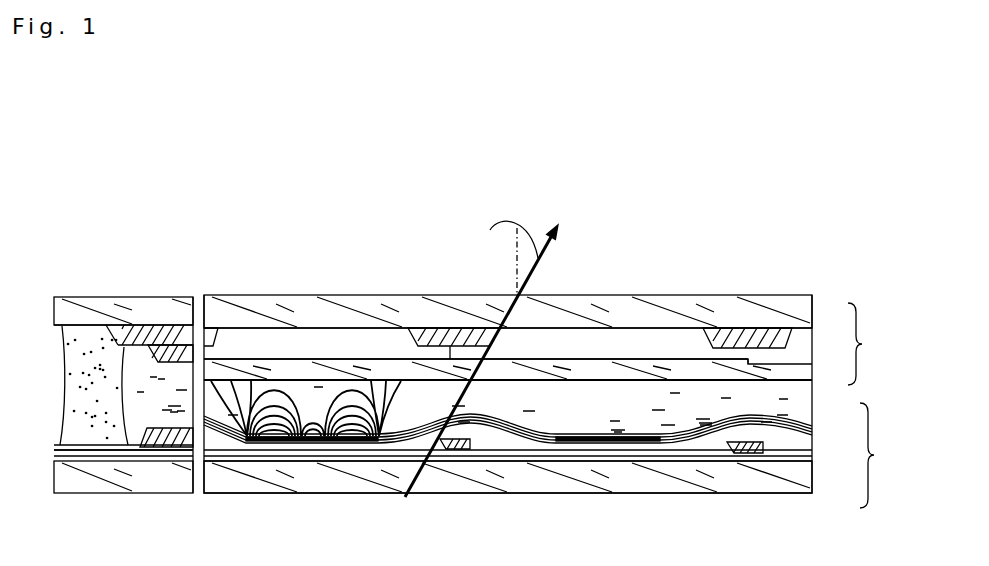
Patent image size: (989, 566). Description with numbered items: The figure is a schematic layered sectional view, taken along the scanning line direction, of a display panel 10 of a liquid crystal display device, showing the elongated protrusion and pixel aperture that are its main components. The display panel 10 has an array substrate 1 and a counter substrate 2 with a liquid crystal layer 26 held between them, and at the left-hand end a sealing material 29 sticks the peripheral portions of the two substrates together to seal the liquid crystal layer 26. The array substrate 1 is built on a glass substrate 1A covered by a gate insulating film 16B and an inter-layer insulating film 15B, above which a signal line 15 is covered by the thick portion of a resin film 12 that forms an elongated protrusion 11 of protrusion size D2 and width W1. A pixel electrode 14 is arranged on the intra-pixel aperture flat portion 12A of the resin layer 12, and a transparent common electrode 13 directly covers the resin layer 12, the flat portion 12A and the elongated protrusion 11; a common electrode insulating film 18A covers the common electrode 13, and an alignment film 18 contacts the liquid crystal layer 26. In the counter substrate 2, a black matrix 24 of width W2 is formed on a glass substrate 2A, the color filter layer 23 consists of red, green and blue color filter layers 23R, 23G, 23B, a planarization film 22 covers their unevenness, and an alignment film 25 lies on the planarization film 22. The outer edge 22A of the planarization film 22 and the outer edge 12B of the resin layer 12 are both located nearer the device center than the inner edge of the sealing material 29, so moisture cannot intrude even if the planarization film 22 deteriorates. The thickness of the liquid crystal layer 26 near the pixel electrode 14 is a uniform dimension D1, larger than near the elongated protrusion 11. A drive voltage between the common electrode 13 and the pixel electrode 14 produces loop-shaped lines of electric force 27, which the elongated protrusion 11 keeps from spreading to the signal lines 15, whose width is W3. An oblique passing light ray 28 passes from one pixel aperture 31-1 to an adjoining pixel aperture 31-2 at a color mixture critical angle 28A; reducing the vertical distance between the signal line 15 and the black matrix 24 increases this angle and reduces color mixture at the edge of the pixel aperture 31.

The display panel 10 is at (103, 236).
The sealing material 29 is at (94, 340).
The outer edge of the planarization film 22A is at (138, 342).
The planarization film 22 is at (169, 345).
The black matrix 24 is at (185, 335).
The lines of electric force 27 is at (270, 395).
The pixel aperture 31 is at (410, 261).
The pixel aperture 31-1 is at (401, 293).
The adjoining pixel aperture 31-2 is at (600, 292).
The color mixture critical angle 28A is at (509, 258).
The oblique passing light ray 28 is at (533, 275).
The red color filter layer 23R is at (312, 347).
The green color filter layer 23G is at (596, 347).
The blue color filter layer 23B is at (782, 356).
The color filter layer 23 is at (812, 341).
The glass substrate of the counter substrate 2A is at (812, 320).
The alignment film 25 is at (812, 379).
The counter substrate 2 is at (861, 344).
The liquid crystal layer 26 is at (812, 392).
The alignment film 18 is at (812, 432).
The common electrode insulating film 18A is at (812, 436).
The common electrode 13 is at (812, 440).
The resin film 12 is at (178, 440).
The outer edge of the resin layer 12B is at (147, 432).
The intra-pixel aperture flat portion 12A is at (655, 524).
The inter-layer insulating film 15B is at (812, 457).
The gate insulating film 16B is at (812, 462).
The glass substrate of the array substrate 1A is at (812, 476).
The array substrate 1 is at (873, 455).
The elongated protrusion 11 is at (217, 437).
The pixel electrode 14 is at (280, 441).
The signal line 15 is at (453, 450).
The width of the elongated protrusion W1 is at (800, 527).
The width of the black matrix linear portion W2 is at (790, 287).
The width of the signal line W3 is at (765, 505).
The liquid crystal layer thickness D1 is at (624, 381).
The protrusion size D2 is at (658, 438).